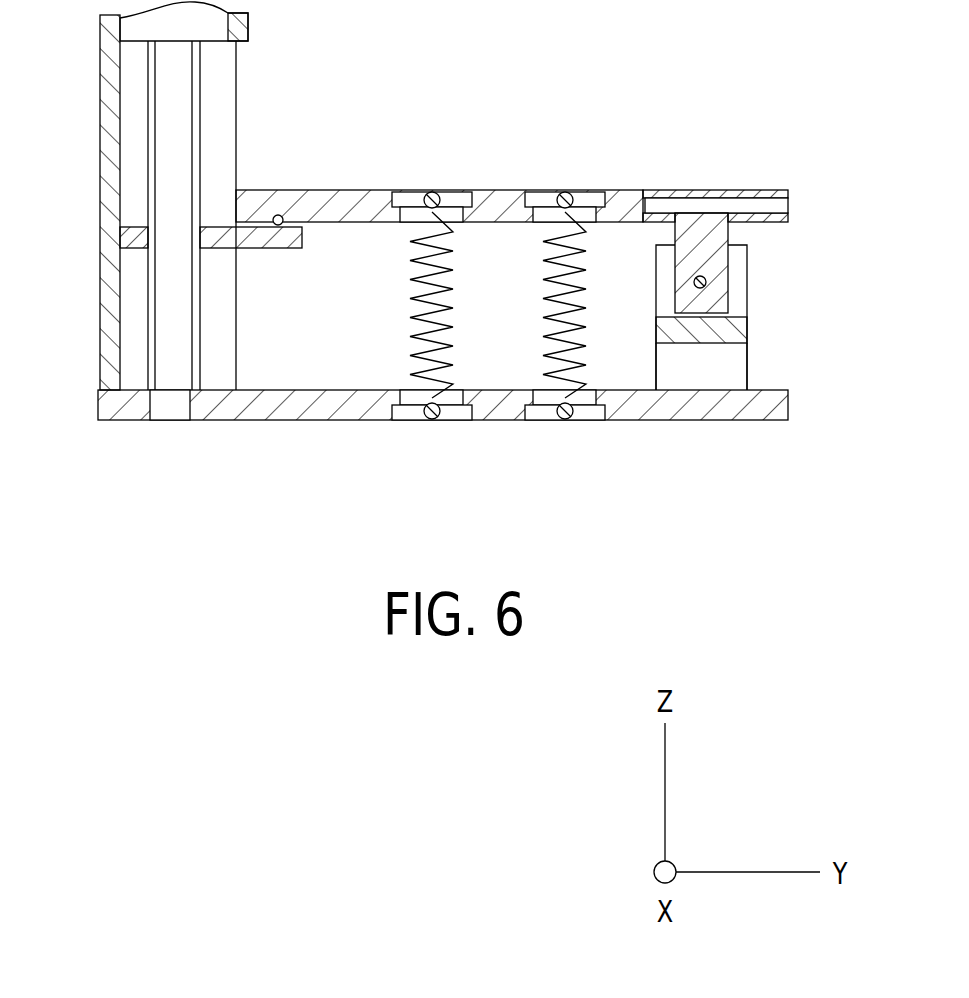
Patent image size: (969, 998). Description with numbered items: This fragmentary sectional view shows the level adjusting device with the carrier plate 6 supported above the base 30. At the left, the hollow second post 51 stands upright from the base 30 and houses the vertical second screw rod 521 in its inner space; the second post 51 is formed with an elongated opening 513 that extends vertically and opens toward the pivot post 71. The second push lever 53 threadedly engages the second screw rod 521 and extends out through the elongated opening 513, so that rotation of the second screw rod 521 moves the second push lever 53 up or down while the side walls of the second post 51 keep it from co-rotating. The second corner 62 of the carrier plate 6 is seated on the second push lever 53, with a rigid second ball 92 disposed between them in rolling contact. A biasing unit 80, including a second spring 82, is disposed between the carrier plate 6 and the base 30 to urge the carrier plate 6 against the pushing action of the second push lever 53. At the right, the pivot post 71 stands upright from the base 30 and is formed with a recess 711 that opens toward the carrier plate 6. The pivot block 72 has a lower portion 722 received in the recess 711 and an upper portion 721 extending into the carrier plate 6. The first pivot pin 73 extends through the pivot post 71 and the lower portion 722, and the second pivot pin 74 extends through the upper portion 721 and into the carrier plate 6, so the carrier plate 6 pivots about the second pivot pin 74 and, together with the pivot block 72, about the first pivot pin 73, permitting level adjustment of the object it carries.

The second post 51 is at (98, 90).
The second screw rod 521 is at (163, 137).
The elongated opening 513 is at (133, 180).
The second push lever 53 is at (216, 250).
The base 30 is at (270, 421).
The second corner 62 is at (243, 187).
The second ball 92 is at (281, 215).
The biasing unit 80 is at (420, 293).
The second spring 82 is at (447, 327).
The carrier plate 6 is at (618, 186).
The upper portion 721 is at (700, 188).
The second pivot pin 74 is at (763, 207).
The pivot block 72 is at (728, 260).
The first pivot pin 73 is at (707, 285).
The recess 711 is at (743, 294).
The lower portion 722 is at (718, 315).
The pivot post 71 is at (657, 358).